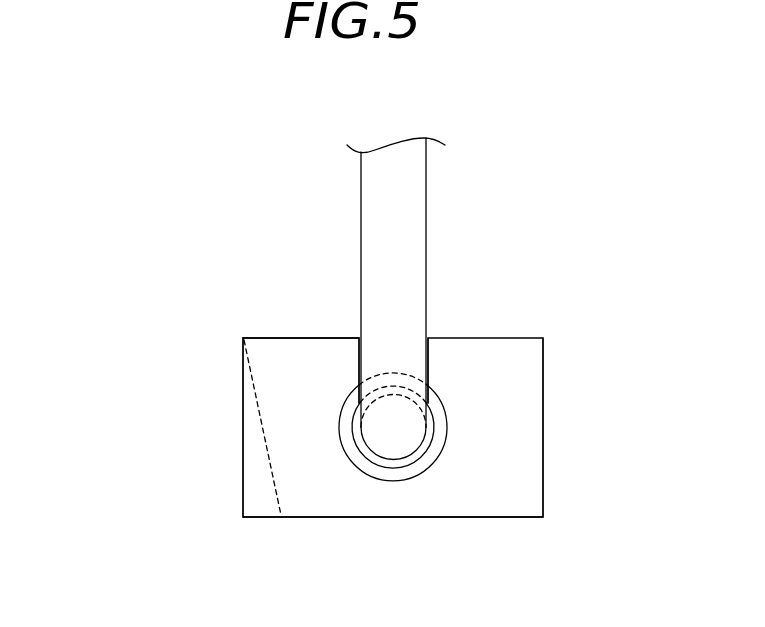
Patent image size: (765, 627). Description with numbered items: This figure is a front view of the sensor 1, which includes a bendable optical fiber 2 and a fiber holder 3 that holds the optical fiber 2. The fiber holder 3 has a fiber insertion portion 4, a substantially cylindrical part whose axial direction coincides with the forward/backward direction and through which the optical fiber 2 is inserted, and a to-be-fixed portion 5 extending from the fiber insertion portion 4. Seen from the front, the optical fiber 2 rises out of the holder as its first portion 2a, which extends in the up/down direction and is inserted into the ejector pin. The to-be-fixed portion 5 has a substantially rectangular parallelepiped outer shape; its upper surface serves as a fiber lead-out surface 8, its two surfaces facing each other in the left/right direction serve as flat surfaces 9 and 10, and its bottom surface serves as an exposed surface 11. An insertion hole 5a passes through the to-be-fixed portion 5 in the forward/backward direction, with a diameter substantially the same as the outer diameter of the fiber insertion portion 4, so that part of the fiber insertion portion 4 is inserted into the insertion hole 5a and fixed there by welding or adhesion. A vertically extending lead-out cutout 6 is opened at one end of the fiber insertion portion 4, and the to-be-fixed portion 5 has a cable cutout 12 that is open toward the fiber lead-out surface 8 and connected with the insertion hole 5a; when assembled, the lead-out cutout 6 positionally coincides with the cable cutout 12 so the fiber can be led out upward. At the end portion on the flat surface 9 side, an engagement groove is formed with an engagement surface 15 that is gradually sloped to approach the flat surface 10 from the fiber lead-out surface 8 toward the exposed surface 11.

The sensor 1 is at (110, 180).
The optical fiber 2 is at (402, 208).
The first portion 2a is at (410, 180).
The fiber holder 3 is at (528, 430).
The fiber insertion portion 4 is at (367, 462).
The to-be-fixed portion 5 is at (528, 385).
The insertion hole 5a is at (400, 462).
The lead-out cutout 6 is at (362, 392).
The fiber lead-out surface 8 is at (520, 337).
The flat surface 9 is at (243, 416).
The flat surface 10 is at (543, 488).
The exposed surface 11 is at (483, 517).
The cable cutout 12 is at (425, 360).
The engagement surface 15 is at (268, 465).